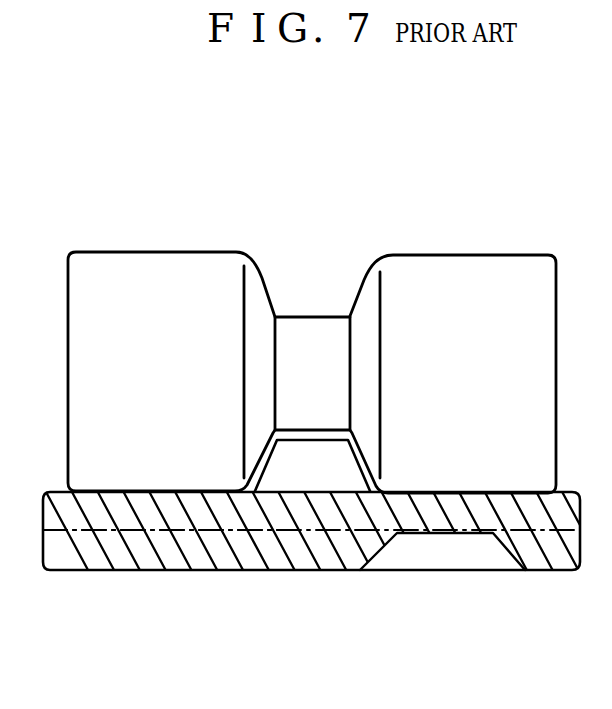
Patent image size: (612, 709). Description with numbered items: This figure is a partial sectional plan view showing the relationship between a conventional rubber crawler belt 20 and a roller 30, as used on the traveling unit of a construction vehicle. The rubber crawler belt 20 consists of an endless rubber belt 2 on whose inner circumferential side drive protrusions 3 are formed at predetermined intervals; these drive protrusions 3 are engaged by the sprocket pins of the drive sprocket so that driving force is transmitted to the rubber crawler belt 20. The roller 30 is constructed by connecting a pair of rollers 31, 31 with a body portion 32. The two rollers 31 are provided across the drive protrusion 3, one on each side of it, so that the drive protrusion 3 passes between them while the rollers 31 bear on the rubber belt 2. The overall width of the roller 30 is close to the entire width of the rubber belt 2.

The rubber belt 2 is at (160, 518).
The drive protrusion 3 is at (305, 467).
The rubber crawler belt 20 is at (448, 571).
The roller 30 is at (192, 162).
The pair of rollers 31 is at (175, 253).
The body portion 32 is at (312, 316).